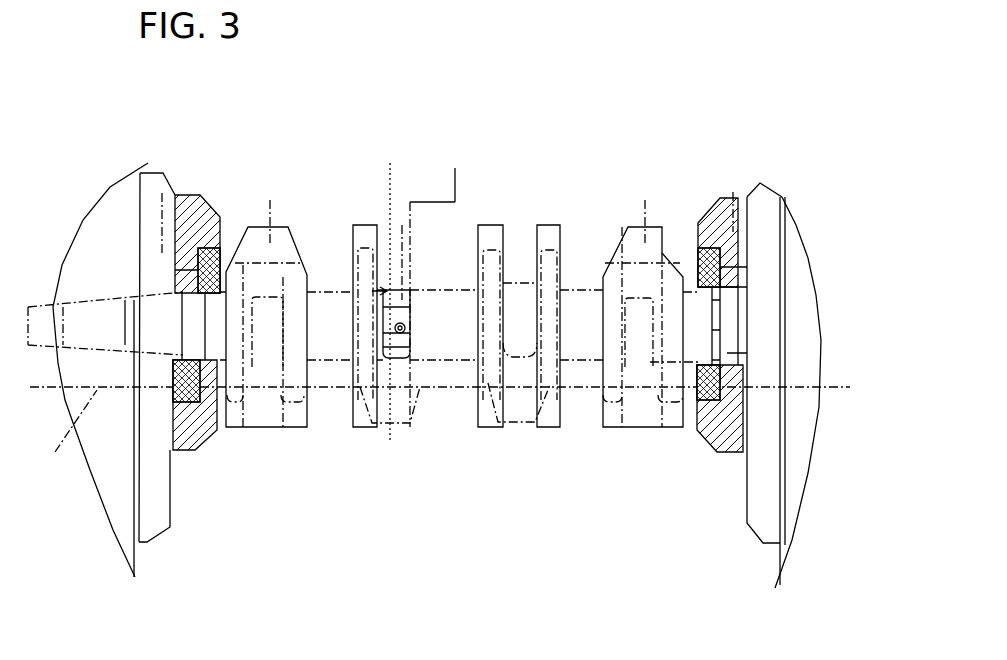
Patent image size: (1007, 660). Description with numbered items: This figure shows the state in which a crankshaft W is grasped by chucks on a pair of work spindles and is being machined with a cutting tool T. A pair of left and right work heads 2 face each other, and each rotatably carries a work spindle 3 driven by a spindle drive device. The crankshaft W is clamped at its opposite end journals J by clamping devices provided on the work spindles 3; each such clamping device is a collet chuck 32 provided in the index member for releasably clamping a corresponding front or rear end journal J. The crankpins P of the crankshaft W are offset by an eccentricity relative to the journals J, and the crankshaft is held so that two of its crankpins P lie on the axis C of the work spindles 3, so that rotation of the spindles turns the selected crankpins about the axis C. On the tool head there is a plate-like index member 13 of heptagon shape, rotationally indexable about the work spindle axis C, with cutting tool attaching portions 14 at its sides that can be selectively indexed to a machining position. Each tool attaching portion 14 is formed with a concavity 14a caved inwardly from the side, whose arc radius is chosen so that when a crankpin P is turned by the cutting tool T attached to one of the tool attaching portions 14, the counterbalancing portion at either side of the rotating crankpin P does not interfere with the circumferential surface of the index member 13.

The work head 2 is at (118, 205).
The journal J is at (161, 192).
The work spindle 3 is at (213, 210).
The collet chuck 32 is at (189, 397).
The crankpin P is at (272, 225).
The crankshaft W is at (563, 398).
The cutting tool T is at (395, 418).
The index member 13 is at (443, 177).
The cutting tool attaching portion 14 is at (385, 291).
The concavity 14a is at (437, 207).
The axis of the work spindles C is at (68, 438).